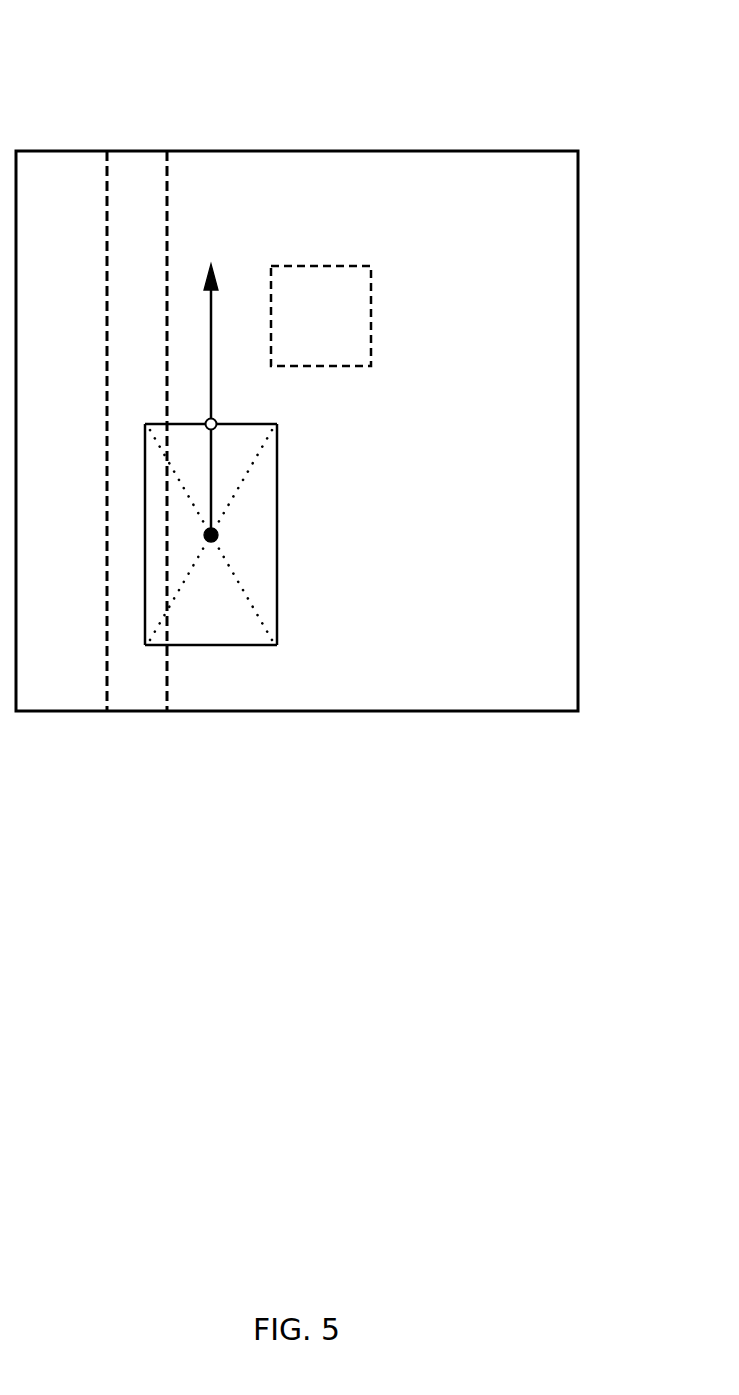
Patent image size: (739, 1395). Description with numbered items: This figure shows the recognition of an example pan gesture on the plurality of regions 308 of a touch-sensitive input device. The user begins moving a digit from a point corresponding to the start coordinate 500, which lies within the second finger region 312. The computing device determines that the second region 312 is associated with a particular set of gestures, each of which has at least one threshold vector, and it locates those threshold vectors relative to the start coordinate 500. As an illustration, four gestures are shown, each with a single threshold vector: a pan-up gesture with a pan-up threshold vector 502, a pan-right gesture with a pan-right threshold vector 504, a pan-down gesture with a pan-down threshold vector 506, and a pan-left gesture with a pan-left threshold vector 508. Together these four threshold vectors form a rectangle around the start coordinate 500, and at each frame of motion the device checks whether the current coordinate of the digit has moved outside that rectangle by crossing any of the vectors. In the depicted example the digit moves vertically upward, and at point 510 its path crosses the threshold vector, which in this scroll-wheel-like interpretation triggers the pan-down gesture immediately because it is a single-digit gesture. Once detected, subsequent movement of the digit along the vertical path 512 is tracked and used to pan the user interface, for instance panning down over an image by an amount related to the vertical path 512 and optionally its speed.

The plurality of regions 308 is at (329, 368).
The second (finger) region 312 is at (570, 513).
The start coordinate 500 is at (216, 533).
The pan-up threshold vector 502 is at (192, 424).
The pan-right threshold vector 504 is at (277, 482).
The pan-down threshold vector 506 is at (208, 646).
The pan-left threshold vector 508 is at (145, 545).
The crossing point 510 is at (215, 421).
The vertical path 512 is at (241, 306).